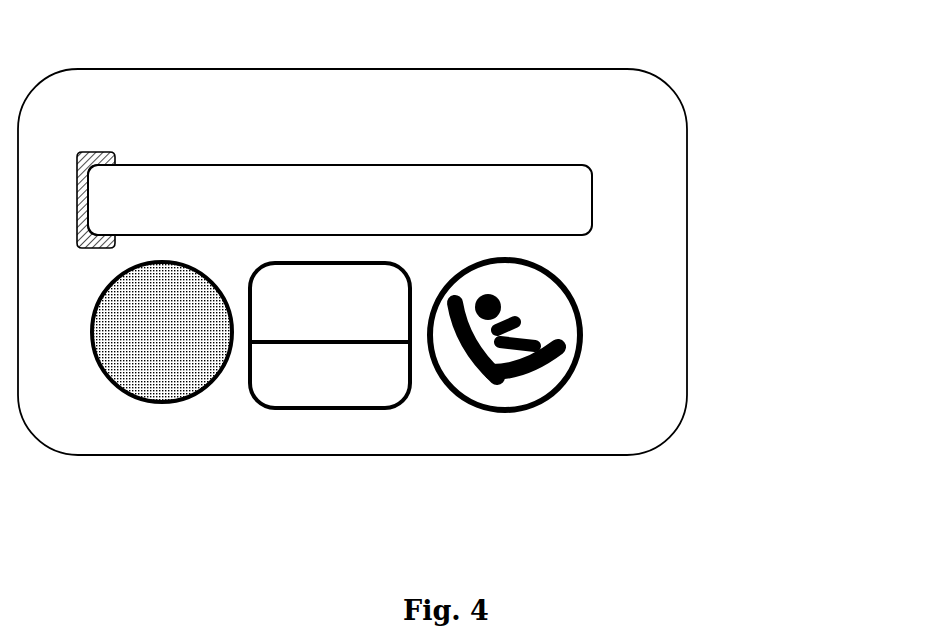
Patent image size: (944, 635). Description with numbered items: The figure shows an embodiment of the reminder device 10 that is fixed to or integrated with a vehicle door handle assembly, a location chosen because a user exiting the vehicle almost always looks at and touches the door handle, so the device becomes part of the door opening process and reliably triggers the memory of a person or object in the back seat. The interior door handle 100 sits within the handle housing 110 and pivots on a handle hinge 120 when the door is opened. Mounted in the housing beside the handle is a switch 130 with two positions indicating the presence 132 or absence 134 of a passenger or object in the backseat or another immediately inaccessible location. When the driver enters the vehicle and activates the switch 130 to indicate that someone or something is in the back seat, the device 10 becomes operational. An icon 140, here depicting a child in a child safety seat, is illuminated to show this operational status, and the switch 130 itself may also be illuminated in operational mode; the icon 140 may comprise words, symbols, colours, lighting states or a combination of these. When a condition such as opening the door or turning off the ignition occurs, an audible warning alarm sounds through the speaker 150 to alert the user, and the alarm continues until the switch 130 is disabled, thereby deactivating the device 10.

The device 10 is at (450, 280).
The interior door handle 100 is at (590, 200).
The handle housing 110 is at (687, 112).
The handle hinge 120 is at (104, 152).
The switch 130 is at (416, 399).
The presence 132 is at (330, 320).
The absence 134 is at (330, 381).
The icon 140 is at (585, 322).
The speaker 150 is at (175, 400).